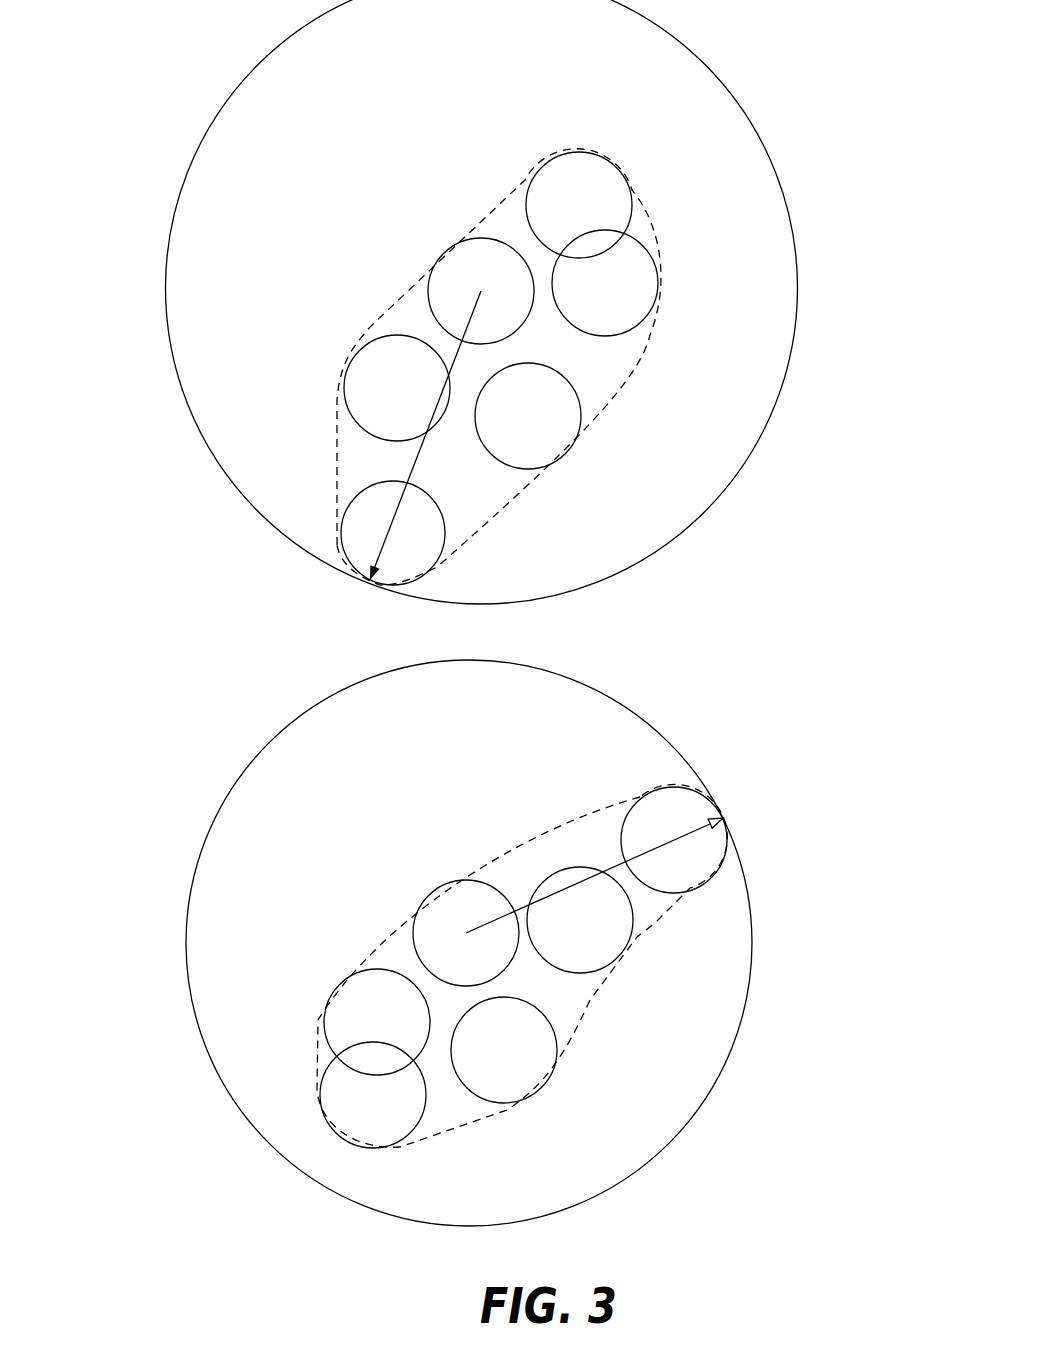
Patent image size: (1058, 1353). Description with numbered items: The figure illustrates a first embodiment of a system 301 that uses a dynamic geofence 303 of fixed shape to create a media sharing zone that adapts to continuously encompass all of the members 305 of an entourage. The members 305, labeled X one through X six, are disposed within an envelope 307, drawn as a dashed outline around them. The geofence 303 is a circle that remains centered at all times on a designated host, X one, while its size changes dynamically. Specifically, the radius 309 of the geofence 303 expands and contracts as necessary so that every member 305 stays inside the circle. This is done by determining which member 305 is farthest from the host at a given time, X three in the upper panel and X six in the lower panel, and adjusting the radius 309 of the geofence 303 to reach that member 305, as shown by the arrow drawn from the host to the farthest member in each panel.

The system 301 is at (168, 57).
The dynamic geofence 303 is at (800, 293).
The members 305 is at (522, 330).
The envelope 307 is at (627, 372).
The radius 309 is at (415, 462).